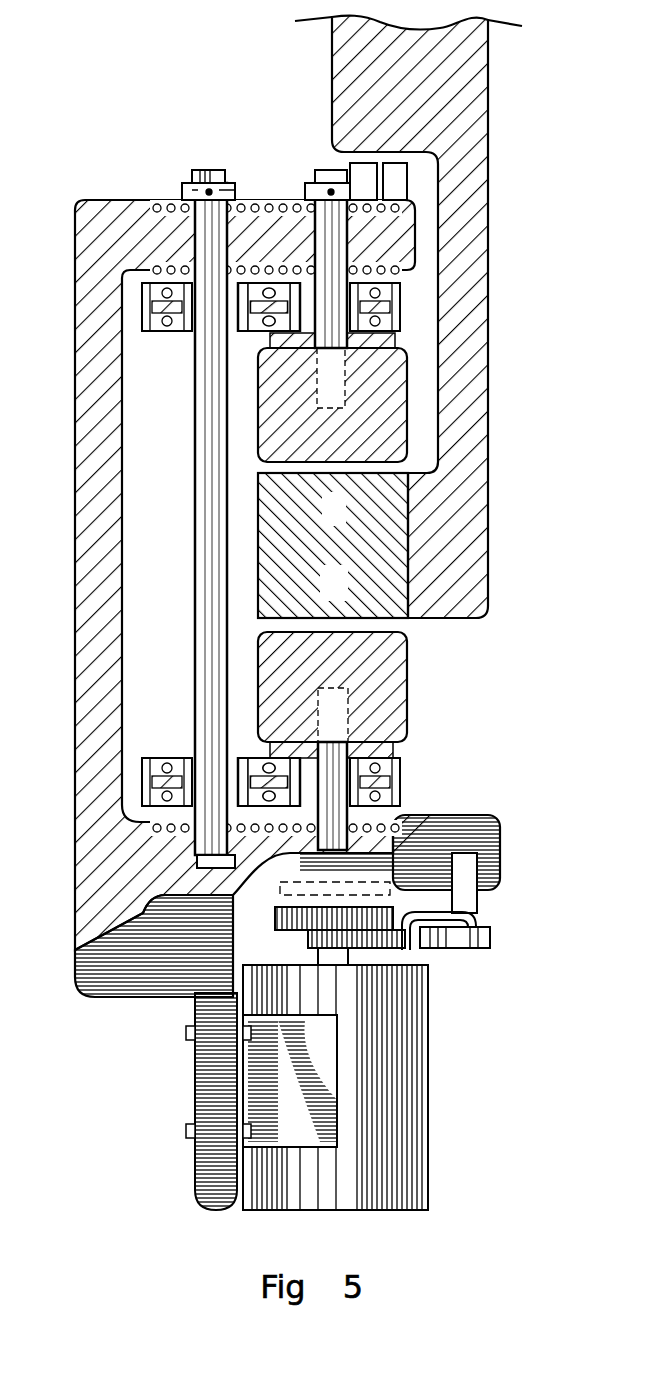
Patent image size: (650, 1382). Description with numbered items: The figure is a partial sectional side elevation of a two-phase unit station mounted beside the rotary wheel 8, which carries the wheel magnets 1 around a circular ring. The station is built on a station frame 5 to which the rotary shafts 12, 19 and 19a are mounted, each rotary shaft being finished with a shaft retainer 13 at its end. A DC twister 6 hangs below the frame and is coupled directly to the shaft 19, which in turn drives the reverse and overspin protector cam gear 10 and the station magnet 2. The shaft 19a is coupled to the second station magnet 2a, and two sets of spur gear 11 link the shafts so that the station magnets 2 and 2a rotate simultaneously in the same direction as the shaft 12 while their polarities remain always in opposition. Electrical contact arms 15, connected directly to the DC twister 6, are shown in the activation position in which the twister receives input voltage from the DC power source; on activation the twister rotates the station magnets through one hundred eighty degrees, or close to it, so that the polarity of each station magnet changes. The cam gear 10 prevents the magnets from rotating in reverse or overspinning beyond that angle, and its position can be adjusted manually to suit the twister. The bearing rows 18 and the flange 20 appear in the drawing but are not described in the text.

The wheel magnet 1 is at (280, 567).
The station magnet 2 is at (380, 693).
The station magnet 2a is at (380, 420).
The station frame 5 is at (85, 292).
The DC twister 6 is at (410, 1087).
The rotary wheel 8 is at (338, 97).
The reverse and overspin protector cam gear 10 is at (490, 935).
The spur gear 11 is at (397, 303).
The rotary shaft 12 is at (207, 492).
The shaft retainer 13 is at (182, 190).
The electrical contact arm 15 is at (400, 177).
The ball bearing rows 18 is at (157, 267).
The rotary shaft 19 is at (353, 793).
The rotary shaft 19a is at (362, 325).
The flange 20 is at (262, 350).